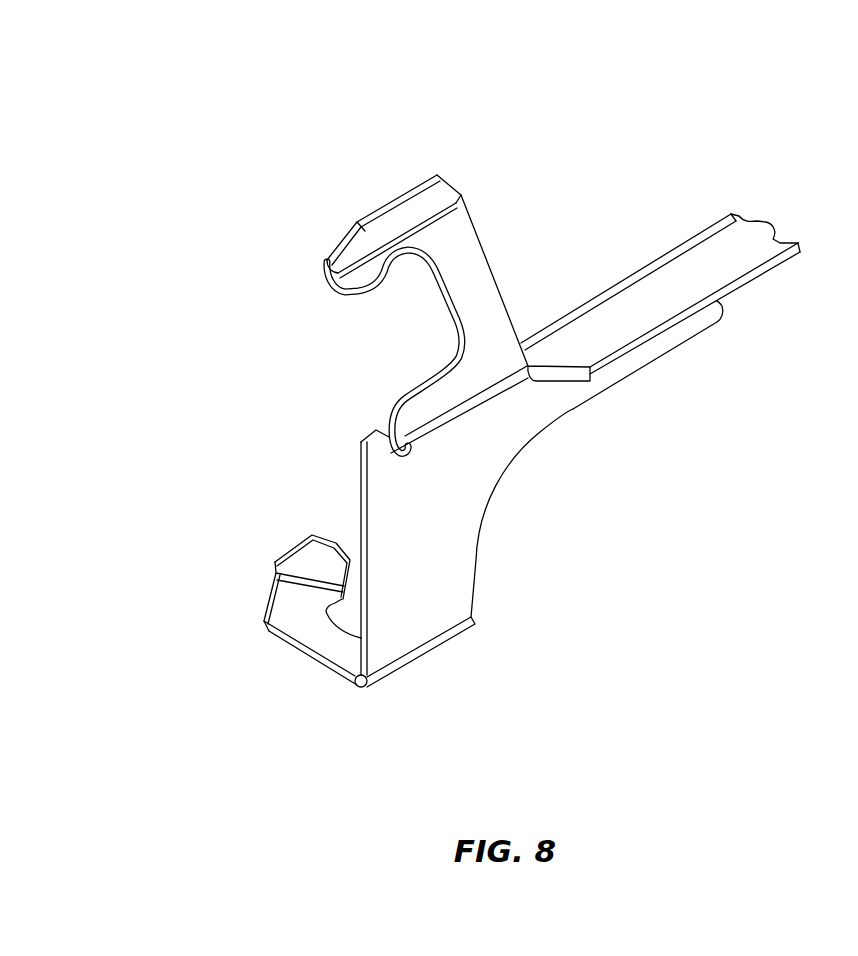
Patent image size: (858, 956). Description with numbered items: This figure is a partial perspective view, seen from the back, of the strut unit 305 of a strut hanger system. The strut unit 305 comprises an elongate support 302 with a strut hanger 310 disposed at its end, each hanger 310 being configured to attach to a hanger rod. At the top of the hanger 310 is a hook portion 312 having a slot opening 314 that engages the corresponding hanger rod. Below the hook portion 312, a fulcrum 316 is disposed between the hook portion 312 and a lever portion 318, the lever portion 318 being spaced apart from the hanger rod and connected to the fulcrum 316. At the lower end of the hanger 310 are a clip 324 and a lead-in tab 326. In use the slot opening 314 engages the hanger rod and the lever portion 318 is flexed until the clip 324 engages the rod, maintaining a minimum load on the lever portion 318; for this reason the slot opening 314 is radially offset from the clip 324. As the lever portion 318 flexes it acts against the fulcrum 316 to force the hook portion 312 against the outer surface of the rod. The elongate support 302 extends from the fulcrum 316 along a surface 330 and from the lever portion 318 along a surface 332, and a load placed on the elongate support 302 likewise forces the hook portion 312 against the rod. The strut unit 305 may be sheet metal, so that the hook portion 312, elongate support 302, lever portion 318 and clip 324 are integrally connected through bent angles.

The strut unit 305 is at (528, 123).
The elongate support 302 is at (738, 191).
The hanger 310 is at (247, 318).
The hook portion 312 is at (486, 242).
The slot opening 314 is at (395, 303).
The fulcrum 316 is at (469, 404).
The lever portion 318 is at (450, 543).
The clip 324 is at (249, 641).
The lead-in tab 326 is at (311, 522).
The surface 330 is at (721, 274).
The surface 332 is at (650, 357).